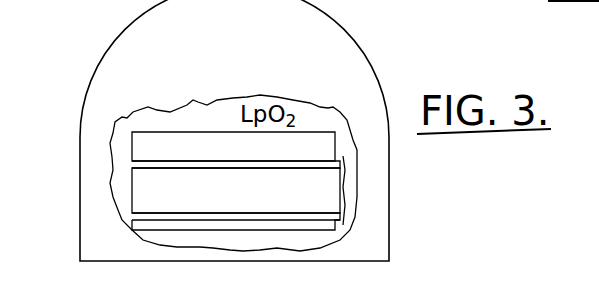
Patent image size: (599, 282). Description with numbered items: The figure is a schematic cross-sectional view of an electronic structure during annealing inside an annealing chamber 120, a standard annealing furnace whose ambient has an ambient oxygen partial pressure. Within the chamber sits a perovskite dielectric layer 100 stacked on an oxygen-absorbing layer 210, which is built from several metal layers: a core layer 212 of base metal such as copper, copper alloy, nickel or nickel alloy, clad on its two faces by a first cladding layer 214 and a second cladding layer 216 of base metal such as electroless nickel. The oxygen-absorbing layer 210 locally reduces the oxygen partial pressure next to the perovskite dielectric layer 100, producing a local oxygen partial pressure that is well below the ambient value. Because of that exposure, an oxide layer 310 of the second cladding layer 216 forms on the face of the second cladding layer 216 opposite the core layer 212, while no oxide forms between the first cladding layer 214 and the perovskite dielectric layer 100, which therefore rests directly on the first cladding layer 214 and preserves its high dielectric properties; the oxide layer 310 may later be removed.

The annealing chamber 120 is at (248, 130).
The perovskite dielectric layer 100 is at (254, 153).
The first cladding layer 214 is at (132, 163).
The core layer 212 is at (254, 197).
The second cladding layer 216 is at (135, 218).
The oxide layer 310 is at (224, 251).
The oxygen-absorbing layer 210 is at (343, 187).